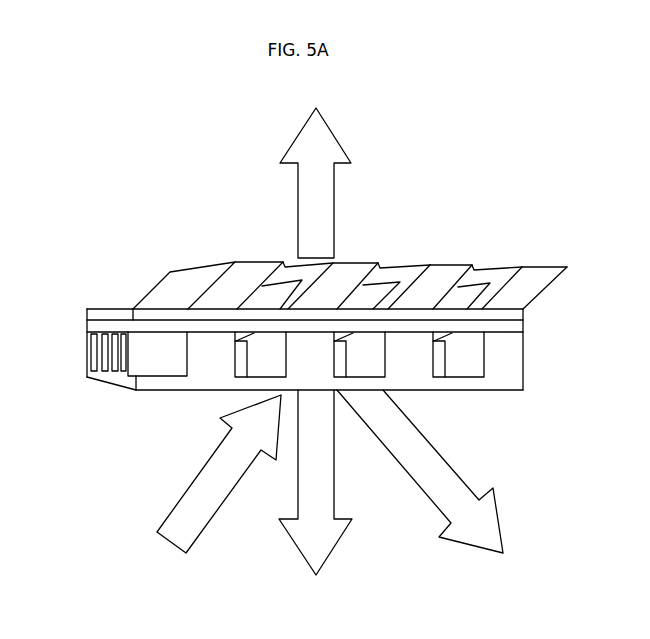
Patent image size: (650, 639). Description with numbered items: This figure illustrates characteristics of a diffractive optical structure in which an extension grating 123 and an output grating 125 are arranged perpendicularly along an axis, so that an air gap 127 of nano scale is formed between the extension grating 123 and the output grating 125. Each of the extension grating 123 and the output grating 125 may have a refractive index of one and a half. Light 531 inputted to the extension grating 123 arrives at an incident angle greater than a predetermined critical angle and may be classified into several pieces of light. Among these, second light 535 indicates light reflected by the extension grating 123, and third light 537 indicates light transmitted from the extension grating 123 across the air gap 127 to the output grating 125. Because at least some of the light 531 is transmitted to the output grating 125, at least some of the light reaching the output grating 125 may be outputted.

The extension grating 123 is at (115, 380).
The output grating 125 is at (188, 272).
The air gap 127 is at (90, 326).
The light 531 is at (195, 492).
The second light 535 is at (442, 463).
The third light 537 is at (328, 208).